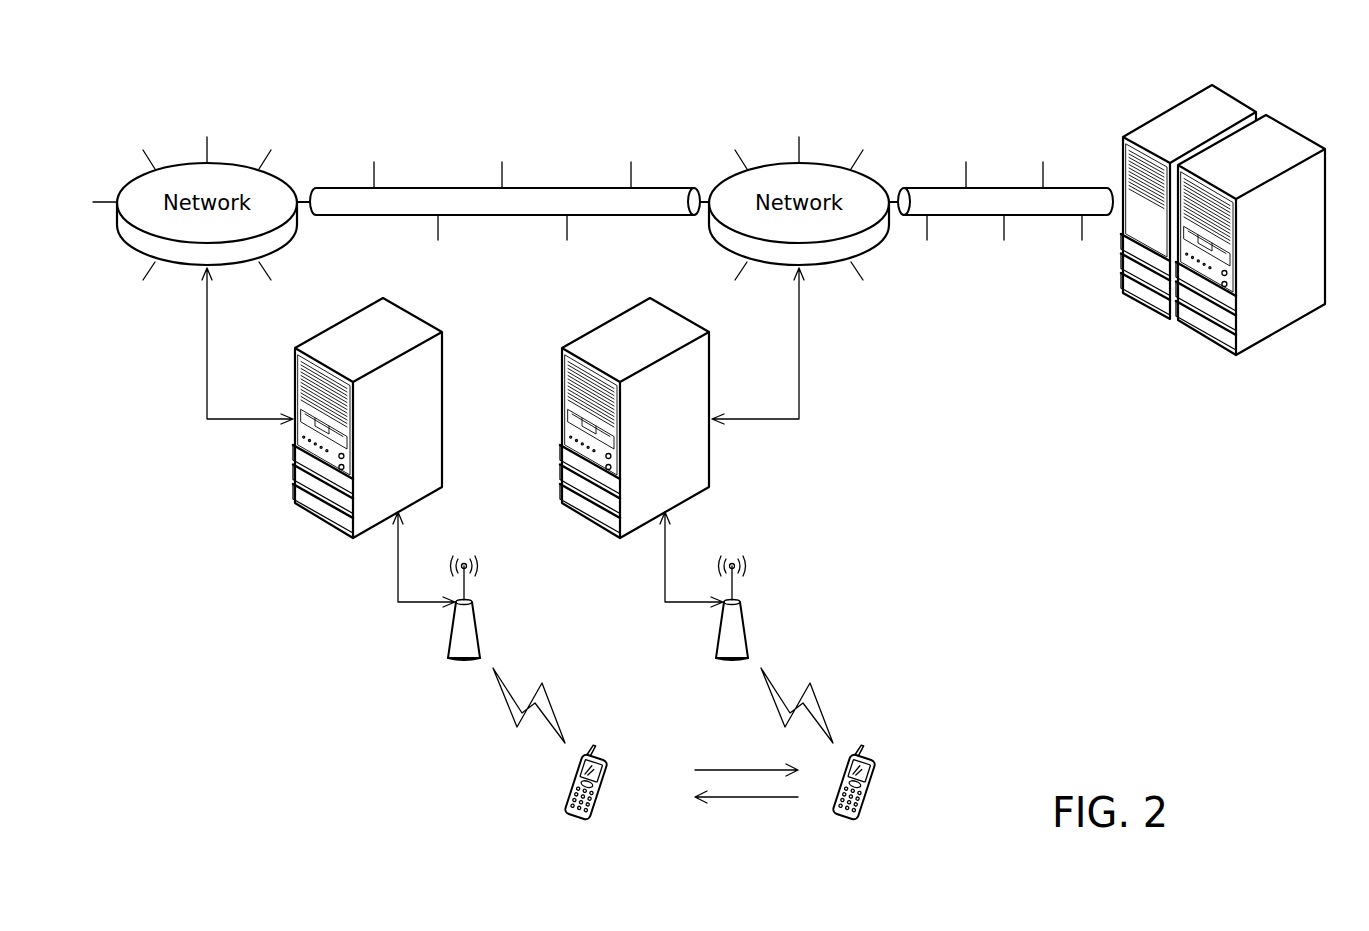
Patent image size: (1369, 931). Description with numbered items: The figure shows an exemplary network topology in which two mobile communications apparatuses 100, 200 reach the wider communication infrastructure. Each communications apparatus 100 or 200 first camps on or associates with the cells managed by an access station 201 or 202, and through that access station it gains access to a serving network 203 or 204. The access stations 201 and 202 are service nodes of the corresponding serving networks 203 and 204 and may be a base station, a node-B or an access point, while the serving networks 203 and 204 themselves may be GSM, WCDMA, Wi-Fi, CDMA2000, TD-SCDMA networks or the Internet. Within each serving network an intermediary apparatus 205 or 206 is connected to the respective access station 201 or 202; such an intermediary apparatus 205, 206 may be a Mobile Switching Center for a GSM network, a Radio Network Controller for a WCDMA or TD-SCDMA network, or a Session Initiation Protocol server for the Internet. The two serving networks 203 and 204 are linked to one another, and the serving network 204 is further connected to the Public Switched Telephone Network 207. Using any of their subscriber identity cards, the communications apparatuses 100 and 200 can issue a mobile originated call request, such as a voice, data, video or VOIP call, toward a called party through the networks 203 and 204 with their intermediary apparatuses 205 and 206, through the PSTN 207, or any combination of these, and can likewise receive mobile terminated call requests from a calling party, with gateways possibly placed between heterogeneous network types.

The communications apparatus 100 is at (604, 790).
The communications apparatus 200 is at (872, 790).
The access station 201 is at (482, 628).
The access station 202 is at (750, 628).
The serving network 203 is at (182, 163).
The serving network 204 is at (772, 163).
The intermediary apparatus 205 is at (442, 357).
The intermediary apparatus 206 is at (710, 357).
The Public Switched Telephone Network 207 is at (1166, 112).